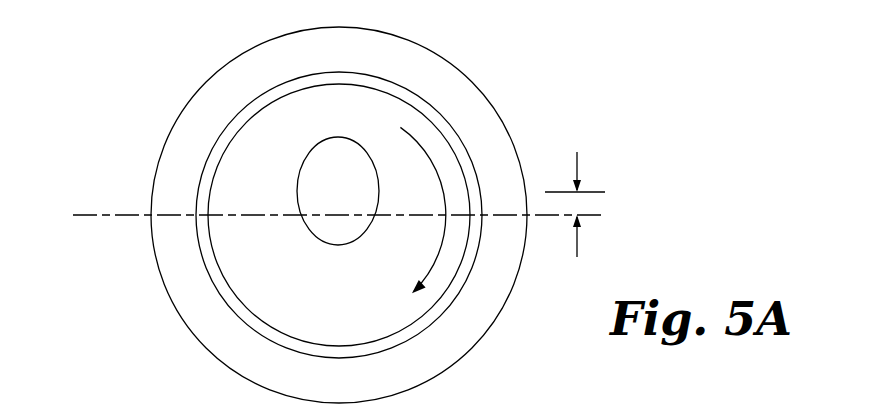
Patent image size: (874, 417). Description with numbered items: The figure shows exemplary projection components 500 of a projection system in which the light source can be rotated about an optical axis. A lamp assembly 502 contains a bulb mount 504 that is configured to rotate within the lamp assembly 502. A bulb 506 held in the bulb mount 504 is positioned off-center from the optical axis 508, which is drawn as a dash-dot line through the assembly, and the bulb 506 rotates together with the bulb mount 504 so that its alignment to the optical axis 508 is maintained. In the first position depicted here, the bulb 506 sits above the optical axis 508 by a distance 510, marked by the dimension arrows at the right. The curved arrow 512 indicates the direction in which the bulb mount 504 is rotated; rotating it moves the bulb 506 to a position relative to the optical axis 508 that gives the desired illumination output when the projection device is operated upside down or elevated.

The projection components 500 is at (727, 77).
The lamp assembly 502 is at (163, 147).
The bulb mount 504 is at (233, 137).
The bulb 506 is at (312, 232).
The optical axis 508 is at (117, 213).
The distance 510 is at (598, 142).
The arrow 512 is at (442, 242).